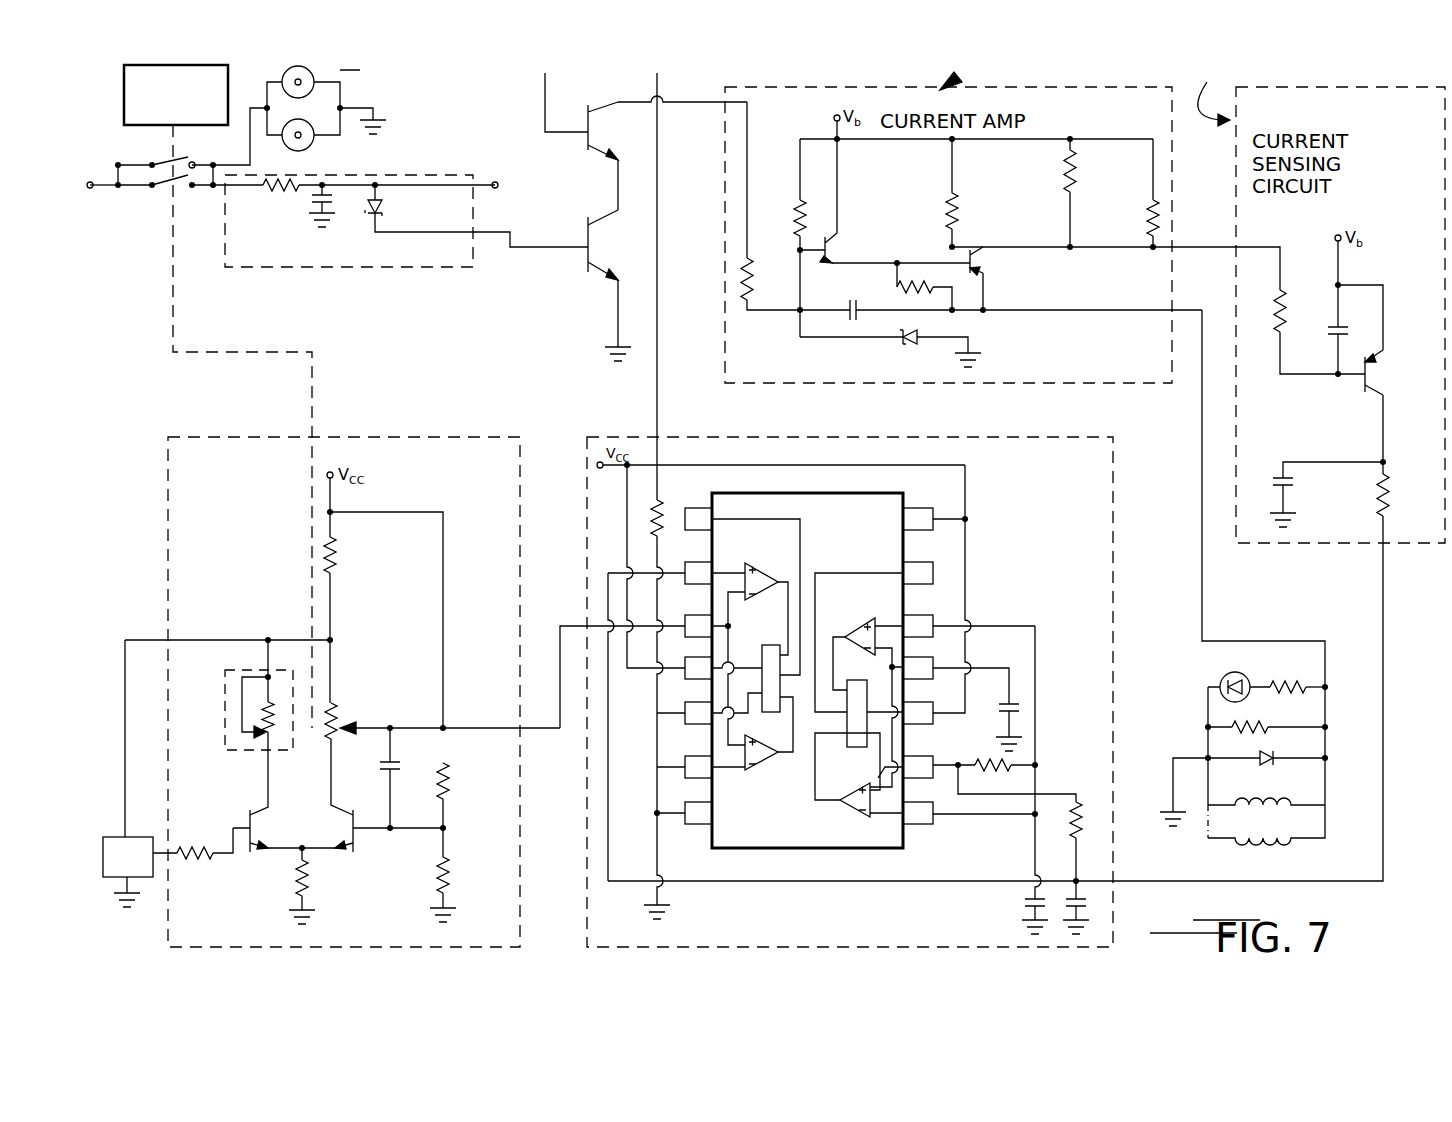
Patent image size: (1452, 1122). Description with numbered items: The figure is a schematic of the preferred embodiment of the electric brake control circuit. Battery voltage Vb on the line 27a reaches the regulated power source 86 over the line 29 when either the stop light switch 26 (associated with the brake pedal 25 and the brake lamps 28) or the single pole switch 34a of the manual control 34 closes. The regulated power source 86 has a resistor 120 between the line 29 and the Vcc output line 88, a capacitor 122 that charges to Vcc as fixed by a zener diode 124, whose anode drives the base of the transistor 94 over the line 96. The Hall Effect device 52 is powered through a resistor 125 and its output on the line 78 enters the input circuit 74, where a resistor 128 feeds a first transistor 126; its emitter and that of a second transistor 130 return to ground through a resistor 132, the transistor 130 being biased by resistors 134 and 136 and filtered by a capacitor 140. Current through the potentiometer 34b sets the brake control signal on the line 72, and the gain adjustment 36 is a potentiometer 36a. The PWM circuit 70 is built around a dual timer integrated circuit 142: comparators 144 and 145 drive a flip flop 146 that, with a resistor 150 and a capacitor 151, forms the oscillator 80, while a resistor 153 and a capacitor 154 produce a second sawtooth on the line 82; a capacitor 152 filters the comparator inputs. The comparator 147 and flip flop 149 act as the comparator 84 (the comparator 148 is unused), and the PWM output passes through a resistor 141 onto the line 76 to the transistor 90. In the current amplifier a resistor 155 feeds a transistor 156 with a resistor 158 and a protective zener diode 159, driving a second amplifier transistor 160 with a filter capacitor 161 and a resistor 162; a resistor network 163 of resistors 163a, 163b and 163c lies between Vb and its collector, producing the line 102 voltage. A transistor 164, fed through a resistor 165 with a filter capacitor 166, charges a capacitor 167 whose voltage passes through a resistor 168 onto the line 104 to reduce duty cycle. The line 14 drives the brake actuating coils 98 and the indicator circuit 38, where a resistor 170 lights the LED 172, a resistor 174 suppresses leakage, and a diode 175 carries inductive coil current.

The output line 14 is at (1196, 480).
The brake pedal 25 is at (140, 127).
The stop light switch 26 is at (160, 149).
The battery voltage line 27a is at (80, 182).
The brake lamps 28 is at (312, 145).
The supply line 29 is at (228, 162).
The manual control 34 is at (316, 390).
The single pole switch 34a is at (180, 193).
The potentiometer 34b is at (350, 722).
The gain adjustment 36 is at (232, 662).
The potentiometer 36a is at (283, 748).
The brake output indicator circuit 38 is at (1192, 702).
The Hall Effect device 52 is at (106, 876).
The pulse width modulating circuit 70 is at (784, 950).
The brake control signal line 72 is at (560, 597).
The input circuit 74 is at (337, 950).
The PWM output line 76 is at (660, 150).
The Hall Effect output line 78 is at (156, 862).
The brake input signal generating means / oscillator 80 is at (97, 826).
The sawtooth waveform line 82 is at (878, 882).
The comparator 84 is at (754, 543).
The regulated power source 86 is at (424, 176).
The Vcc output line 88 is at (495, 182).
The transistor 90 is at (598, 104).
The second transistor 94 is at (617, 277).
The enabling signal line 96 is at (538, 247).
The brake actuating coils 98 is at (1300, 820).
The current amplifier output line 102 is at (1200, 248).
The limiting signal line 104 is at (1388, 727).
The resistor 120 is at (354, 203).
The capacitor 122 is at (332, 200).
The zener diode 124 is at (386, 212).
The resistor 125 is at (338, 558).
The first transistor 126 is at (258, 860).
The resistor 128 is at (195, 842).
The second transistor 130 is at (355, 848).
The resistor 132 is at (318, 896).
The resistor 134 is at (450, 785).
The resistor 136 is at (450, 882).
The filter capacitor 140 is at (397, 776).
The resistor 141 is at (667, 528).
The dual timer integrated circuit 142 is at (850, 850).
The comparator 144 is at (856, 630).
The comparator 145 is at (858, 816).
The flip flop 146 is at (858, 748).
The comparator 147 is at (752, 604).
The comparator 148 is at (756, 774).
The flip flop 149 is at (771, 712).
The resistor 150 is at (1030, 762).
The capacitor 151 is at (1020, 916).
The filter capacitor 152 is at (1030, 713).
The resistor 153 is at (1084, 812).
The capacitor 154 is at (1095, 906).
The resistor 155 is at (780, 276).
The transistor 156 is at (834, 263).
The resistor 158 is at (798, 205).
The zener diode 159 is at (910, 345).
The second amplifier transistor 160 is at (988, 273).
The filter capacitor 161 is at (832, 320).
The resistor 162 is at (934, 295).
The resistor network 163 is at (955, 233).
The resistor 163a is at (965, 215).
The resistor 163b is at (1078, 165).
The resistor 163c is at (1140, 215).
The transistor 164 is at (1387, 373).
The resistor 165 is at (1319, 322).
The filter capacitor 166 is at (1319, 309).
The capacitor 167 is at (1300, 495).
The resistor 168 is at (1392, 505).
The resistor 170 is at (1300, 680).
The LED 172 is at (1229, 672).
The resistor 174 is at (1256, 716).
The diode 175 is at (1268, 765).